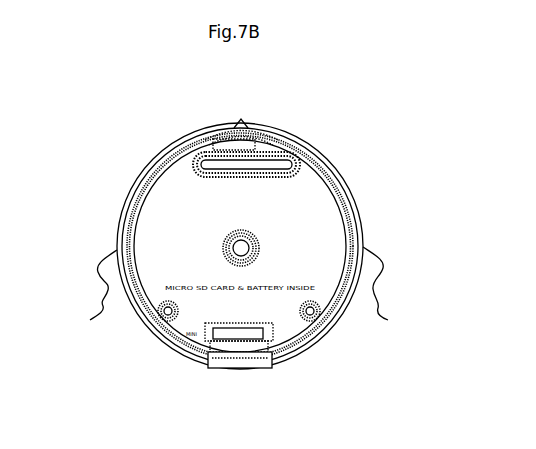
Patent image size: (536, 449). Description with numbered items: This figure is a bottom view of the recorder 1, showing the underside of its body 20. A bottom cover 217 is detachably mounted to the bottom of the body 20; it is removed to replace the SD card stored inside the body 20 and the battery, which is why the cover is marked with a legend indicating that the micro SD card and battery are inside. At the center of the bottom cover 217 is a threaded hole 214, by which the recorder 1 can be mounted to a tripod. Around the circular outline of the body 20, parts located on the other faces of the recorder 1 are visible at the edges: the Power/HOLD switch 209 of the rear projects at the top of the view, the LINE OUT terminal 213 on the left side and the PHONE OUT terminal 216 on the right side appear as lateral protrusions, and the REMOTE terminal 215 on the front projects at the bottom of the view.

The recorder 1 is at (250, 82).
The body 20 is at (136, 160).
The Power/HOLD switch 209 is at (258, 121).
The LINE OUT terminal 213 is at (388, 320).
The threaded hole 214 is at (224, 252).
The REMOTE terminal 215 is at (230, 364).
The PHONE OUT terminal 216 is at (90, 320).
The bottom cover 217 is at (315, 215).